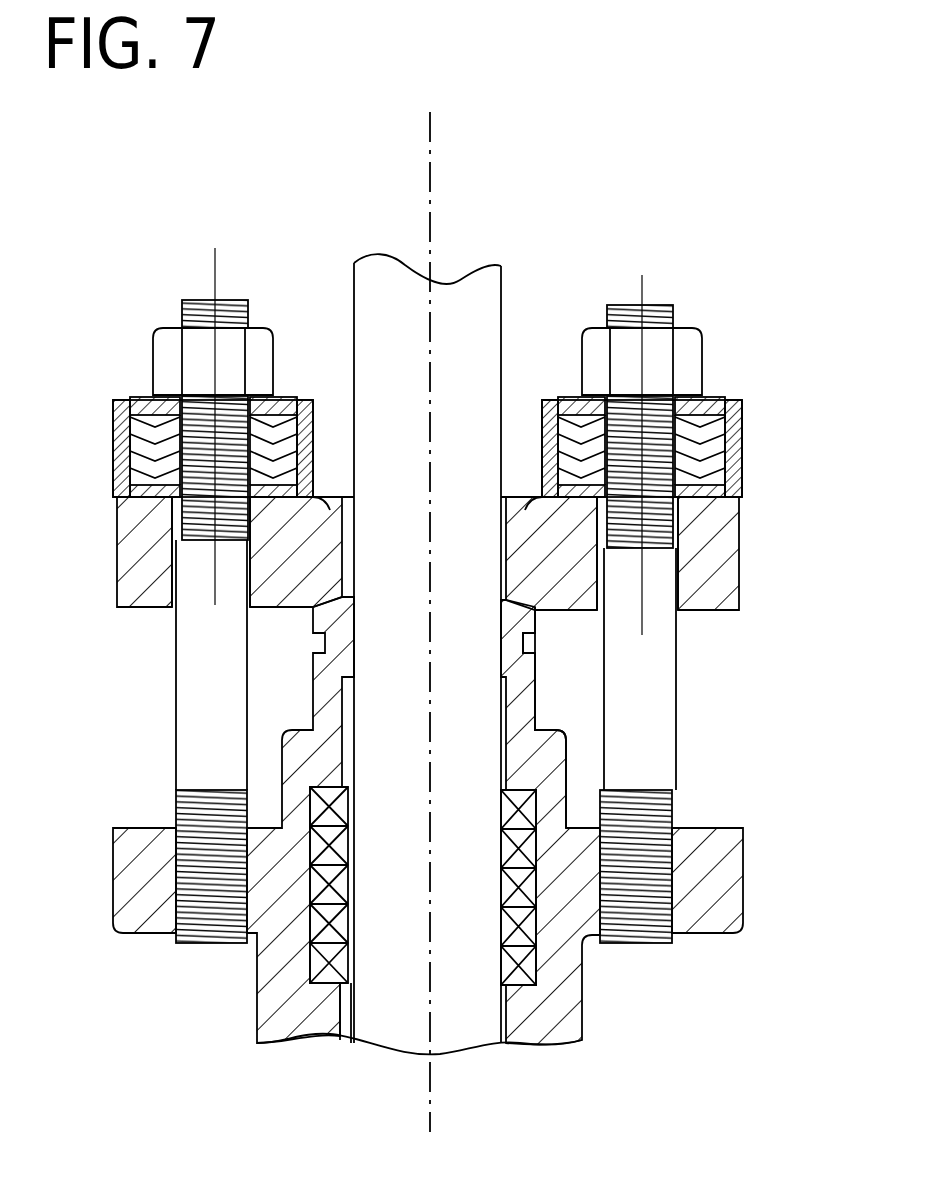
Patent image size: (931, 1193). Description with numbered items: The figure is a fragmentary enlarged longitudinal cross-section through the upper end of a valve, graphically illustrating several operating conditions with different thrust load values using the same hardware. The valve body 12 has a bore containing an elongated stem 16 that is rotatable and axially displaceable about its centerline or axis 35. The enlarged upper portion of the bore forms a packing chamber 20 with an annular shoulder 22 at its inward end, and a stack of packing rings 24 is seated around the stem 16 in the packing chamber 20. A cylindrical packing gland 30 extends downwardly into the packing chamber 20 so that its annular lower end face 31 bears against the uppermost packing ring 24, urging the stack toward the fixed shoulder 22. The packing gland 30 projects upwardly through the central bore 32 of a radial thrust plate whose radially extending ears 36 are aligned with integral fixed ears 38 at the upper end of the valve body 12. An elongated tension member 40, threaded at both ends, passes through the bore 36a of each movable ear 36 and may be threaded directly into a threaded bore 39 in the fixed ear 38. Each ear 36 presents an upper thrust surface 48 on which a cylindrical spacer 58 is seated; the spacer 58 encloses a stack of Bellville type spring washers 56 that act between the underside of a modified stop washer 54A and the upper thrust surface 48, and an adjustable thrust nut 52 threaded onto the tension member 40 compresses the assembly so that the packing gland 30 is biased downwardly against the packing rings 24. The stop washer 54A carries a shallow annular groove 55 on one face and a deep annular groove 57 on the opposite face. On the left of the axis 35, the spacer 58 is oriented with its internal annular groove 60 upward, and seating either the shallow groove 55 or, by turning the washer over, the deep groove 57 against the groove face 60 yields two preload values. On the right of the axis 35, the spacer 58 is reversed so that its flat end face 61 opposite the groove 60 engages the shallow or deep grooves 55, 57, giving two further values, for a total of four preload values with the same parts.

The valve body 12 is at (567, 1014).
The elongated stem 16 is at (446, 697).
The packing chamber 20 is at (517, 882).
The annular shoulder 22 is at (350, 976).
The packing rings 24 is at (346, 852).
The packing gland 30 is at (318, 690).
The annular lower end face 31 is at (502, 800).
The central bore 32 is at (343, 565).
The centerline or axis 35 is at (434, 184).
The ears or arms 36 is at (728, 577).
The bore 36a is at (174, 606).
The ears 38 is at (130, 878).
The threaded bore 39 is at (178, 928).
The tension member 40 is at (192, 703).
The upper thrust surface 48 is at (320, 497).
The thrust nut 52 is at (165, 346).
The modified stop washer 54A is at (140, 396).
The shallow annular groove 55 is at (113, 422).
The spring washers 56 is at (130, 455).
The deep annular groove 57 is at (131, 398).
The cylindrical spacer 58 is at (130, 483).
The internal annular groove 60 is at (125, 405).
The flat end face 61 is at (330, 510).